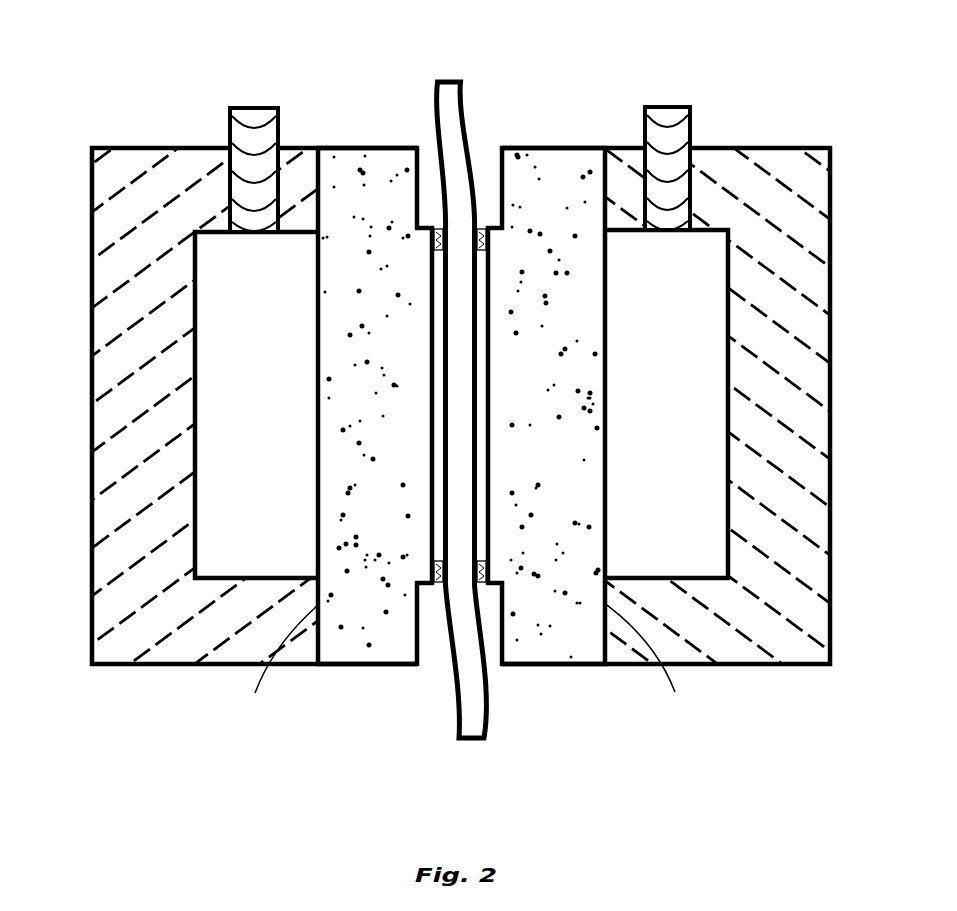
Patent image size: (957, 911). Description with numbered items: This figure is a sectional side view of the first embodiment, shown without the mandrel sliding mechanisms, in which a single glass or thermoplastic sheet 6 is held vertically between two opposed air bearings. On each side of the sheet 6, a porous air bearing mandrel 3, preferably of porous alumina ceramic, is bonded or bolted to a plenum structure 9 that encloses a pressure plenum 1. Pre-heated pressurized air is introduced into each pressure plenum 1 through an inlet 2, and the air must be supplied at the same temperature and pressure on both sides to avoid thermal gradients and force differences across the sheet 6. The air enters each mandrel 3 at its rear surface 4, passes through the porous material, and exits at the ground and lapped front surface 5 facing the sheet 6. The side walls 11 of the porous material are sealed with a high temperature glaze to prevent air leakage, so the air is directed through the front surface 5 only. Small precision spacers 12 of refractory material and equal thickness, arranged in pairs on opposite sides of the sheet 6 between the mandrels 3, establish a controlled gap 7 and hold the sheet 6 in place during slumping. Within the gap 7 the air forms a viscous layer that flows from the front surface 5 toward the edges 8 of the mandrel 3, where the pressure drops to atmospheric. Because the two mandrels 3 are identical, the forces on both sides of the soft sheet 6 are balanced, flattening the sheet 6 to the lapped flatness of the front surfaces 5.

The pressure plenum 1 is at (228, 508).
The inlet 2 is at (253, 153).
The air bearing mandrel 3 is at (380, 630).
The air entry surface 4 is at (313, 538).
The front surface 5 is at (463, 634).
The glass or thermoplastic sheet 6 is at (463, 102).
The gap 7 is at (438, 403).
The mandrel edge 8 is at (432, 160).
The plenum structure 9 is at (125, 415).
The side wall 11 is at (355, 141).
The precision spacer 12 is at (435, 227).